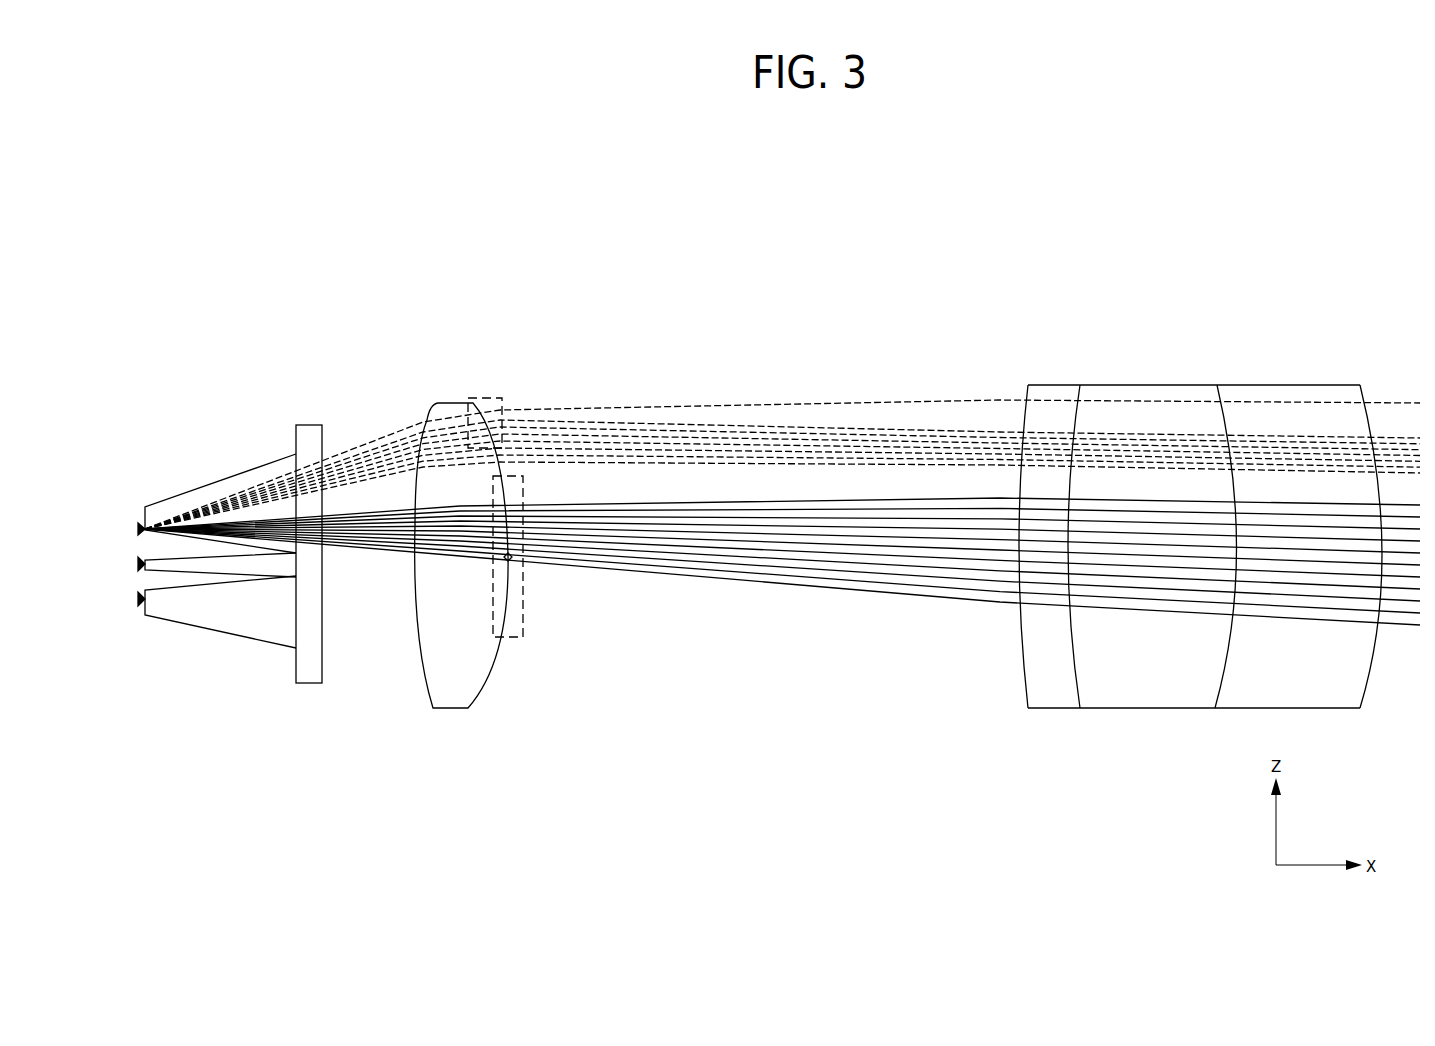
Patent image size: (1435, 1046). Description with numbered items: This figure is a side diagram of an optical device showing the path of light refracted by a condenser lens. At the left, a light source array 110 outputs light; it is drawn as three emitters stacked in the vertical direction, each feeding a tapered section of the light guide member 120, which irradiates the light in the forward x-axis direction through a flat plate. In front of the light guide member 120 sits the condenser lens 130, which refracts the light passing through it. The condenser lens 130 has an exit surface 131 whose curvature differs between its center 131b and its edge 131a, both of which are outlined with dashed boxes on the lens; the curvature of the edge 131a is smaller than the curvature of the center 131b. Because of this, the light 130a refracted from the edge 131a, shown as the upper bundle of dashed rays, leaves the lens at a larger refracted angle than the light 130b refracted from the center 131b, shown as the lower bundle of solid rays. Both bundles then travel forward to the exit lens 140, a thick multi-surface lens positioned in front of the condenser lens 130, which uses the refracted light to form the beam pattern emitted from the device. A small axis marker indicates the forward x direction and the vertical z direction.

The light source array 110 is at (132, 527).
The light guide member 120 is at (232, 450).
The condenser lens 130 is at (497, 515).
The light refracted from the edge of the exit surface 130a is at (793, 402).
The light refracted from the center of the exit surface 130b is at (793, 585).
The exit surface 131 is at (498, 672).
The edge 131a is at (503, 402).
The center 131b is at (524, 612).
The exit lens 140 is at (1081, 357).